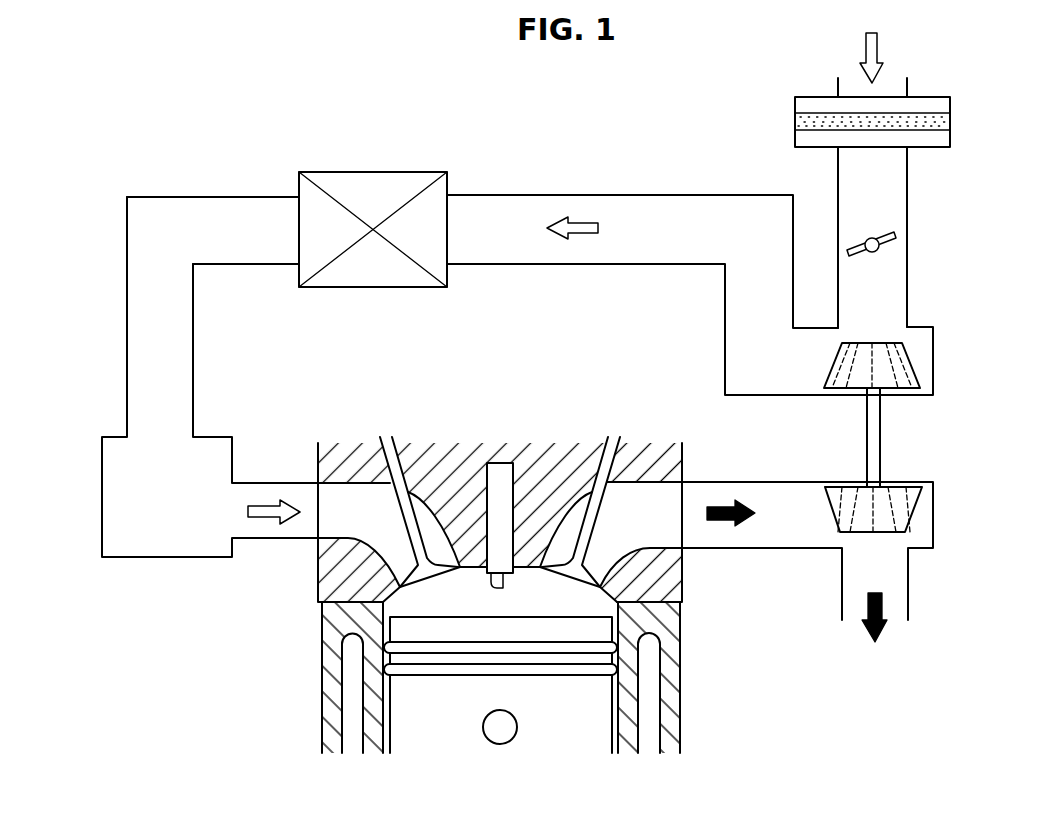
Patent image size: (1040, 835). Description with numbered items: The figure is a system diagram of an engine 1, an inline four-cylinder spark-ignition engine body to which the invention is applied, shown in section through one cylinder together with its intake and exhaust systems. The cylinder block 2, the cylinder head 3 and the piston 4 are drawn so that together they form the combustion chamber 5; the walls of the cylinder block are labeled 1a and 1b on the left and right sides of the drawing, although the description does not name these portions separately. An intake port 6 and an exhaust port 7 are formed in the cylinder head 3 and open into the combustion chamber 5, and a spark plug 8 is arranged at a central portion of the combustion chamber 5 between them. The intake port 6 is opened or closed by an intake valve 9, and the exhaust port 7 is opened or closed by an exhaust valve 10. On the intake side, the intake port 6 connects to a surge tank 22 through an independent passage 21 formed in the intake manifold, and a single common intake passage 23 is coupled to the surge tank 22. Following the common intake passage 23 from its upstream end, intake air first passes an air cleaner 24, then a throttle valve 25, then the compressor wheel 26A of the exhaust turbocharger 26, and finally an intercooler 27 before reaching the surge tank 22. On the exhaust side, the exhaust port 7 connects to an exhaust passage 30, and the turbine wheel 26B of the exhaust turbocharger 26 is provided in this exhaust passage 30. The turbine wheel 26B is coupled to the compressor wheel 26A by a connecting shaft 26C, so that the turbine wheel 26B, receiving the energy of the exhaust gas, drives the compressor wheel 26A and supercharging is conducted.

The engine 1 is at (487, 599).
The cylinder block wall (one side) 1a is at (322, 728).
The cylinder block wall (other side) 1b is at (680, 673).
The cylinder block 2 is at (511, 690).
The cylinder head 3 is at (517, 597).
The piston 4 is at (558, 705).
The combustion chamber 5 is at (448, 598).
The intake port 6 is at (358, 522).
The exhaust port 7 is at (655, 525).
The spark plug 8 is at (492, 520).
The intake valve 9 is at (410, 571).
The exhaust valve 10 is at (645, 602).
The independent passage 21 is at (258, 482).
The surge tank 22 is at (102, 480).
The common intake passage 23 is at (563, 195).
The air cleaner 24 is at (952, 120).
The throttle valve 25 is at (885, 232).
The exhaust turbocharger 26 is at (912, 436).
The compressor wheel 26A is at (900, 369).
The turbine wheel 26B is at (900, 512).
The connecting shaft 26C is at (868, 432).
The intercooler 27 is at (375, 171).
The exhaust passage 30 is at (720, 480).